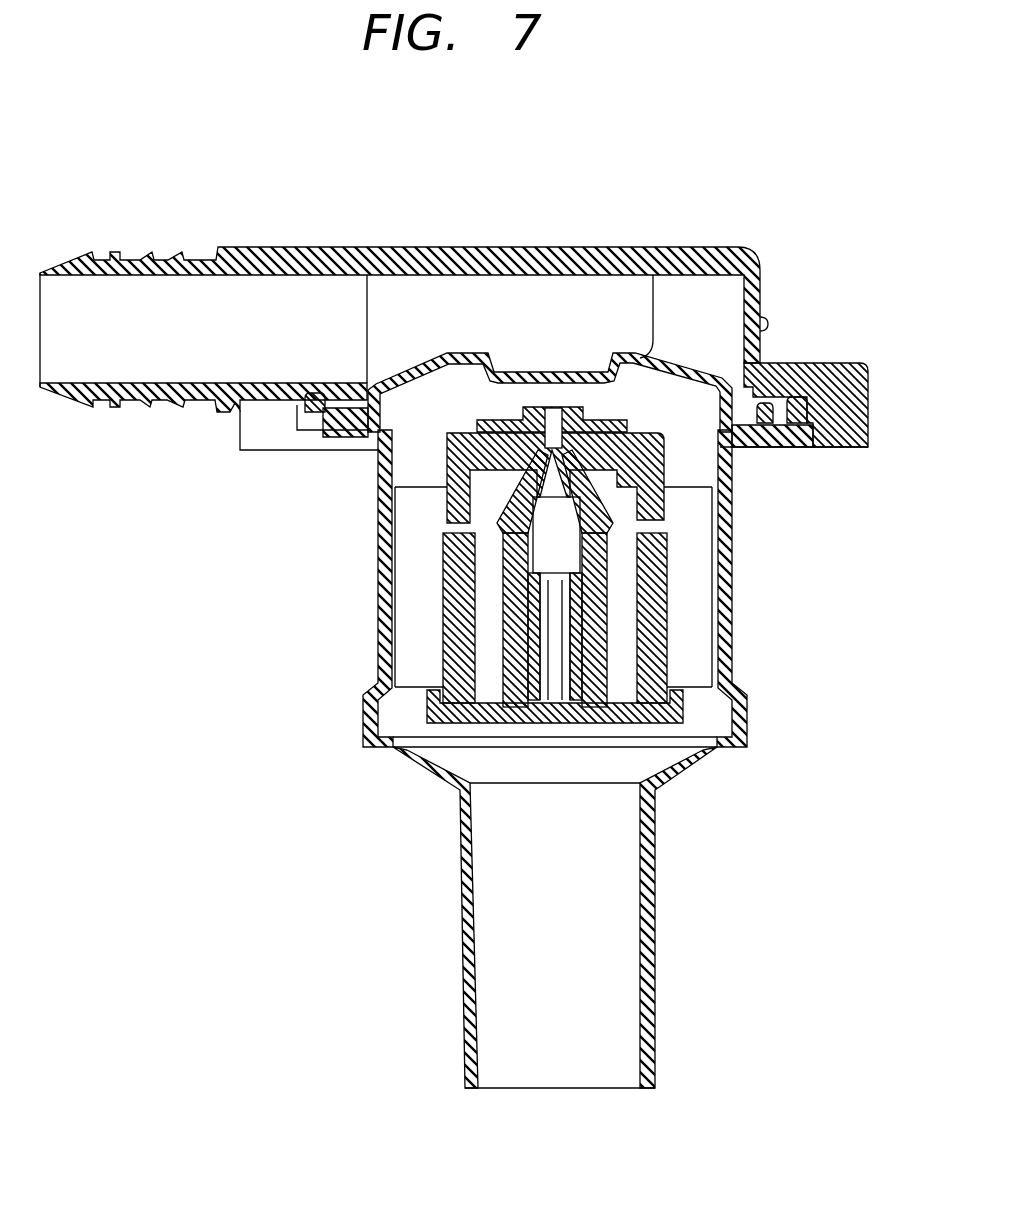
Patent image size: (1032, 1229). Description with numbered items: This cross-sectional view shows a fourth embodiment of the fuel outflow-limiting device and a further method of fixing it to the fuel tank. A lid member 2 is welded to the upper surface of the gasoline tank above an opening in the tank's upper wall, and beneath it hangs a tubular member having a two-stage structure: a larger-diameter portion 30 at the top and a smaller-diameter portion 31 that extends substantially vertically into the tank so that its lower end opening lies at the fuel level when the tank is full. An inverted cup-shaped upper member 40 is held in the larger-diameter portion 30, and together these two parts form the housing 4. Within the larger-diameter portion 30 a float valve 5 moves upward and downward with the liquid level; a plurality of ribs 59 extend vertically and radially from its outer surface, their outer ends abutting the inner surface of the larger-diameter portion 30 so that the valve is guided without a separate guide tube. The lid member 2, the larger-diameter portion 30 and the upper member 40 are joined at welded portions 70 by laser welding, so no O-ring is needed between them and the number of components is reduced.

The lid member 2 is at (283, 265).
The housing 4 is at (737, 657).
The float valve 5 is at (440, 568).
The larger-diameter portion 30 is at (383, 633).
The smaller-diameter portion 31 is at (463, 882).
The upper member 40 is at (645, 355).
The ribs 59 is at (683, 590).
The welded portions 70 is at (323, 440).